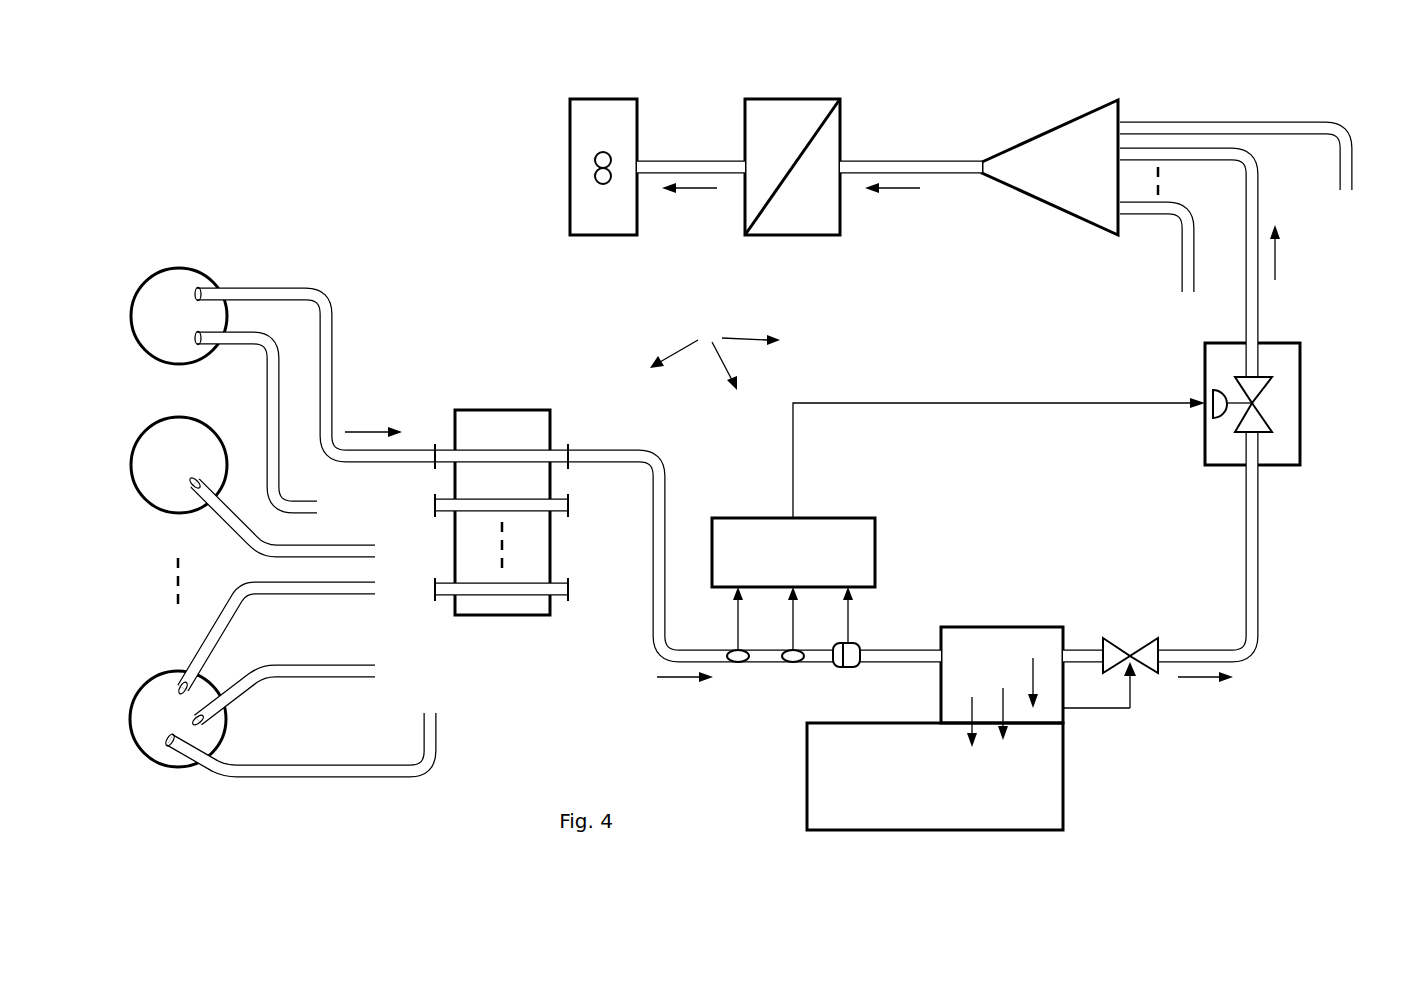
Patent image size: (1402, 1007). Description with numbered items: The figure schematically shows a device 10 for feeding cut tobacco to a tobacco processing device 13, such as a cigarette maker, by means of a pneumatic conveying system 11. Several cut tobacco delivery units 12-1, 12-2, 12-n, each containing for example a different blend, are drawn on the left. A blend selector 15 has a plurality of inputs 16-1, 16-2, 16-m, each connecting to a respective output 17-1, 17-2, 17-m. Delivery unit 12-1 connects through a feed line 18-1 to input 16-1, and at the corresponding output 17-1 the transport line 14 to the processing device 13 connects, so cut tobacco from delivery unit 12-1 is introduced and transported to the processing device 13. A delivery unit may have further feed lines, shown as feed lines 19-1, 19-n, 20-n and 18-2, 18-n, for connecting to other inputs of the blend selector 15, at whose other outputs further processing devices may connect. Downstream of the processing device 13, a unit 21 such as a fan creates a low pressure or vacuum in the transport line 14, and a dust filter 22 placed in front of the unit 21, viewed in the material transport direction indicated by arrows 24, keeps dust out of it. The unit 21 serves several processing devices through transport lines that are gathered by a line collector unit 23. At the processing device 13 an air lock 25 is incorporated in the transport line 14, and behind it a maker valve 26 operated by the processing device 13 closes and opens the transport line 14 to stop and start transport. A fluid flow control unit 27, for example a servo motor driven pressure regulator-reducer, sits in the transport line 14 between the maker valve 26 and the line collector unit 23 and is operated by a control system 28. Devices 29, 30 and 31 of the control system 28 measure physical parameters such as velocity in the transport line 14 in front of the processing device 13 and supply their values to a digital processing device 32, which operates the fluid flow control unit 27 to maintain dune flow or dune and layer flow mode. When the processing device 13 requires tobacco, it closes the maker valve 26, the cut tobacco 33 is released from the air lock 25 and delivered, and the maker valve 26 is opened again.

The device for feeding cut tobacco 10 is at (302, 132).
The pneumatic conveying system 11 is at (715, 352).
The cut tobacco delivery unit 12-1 is at (178, 275).
The cut tobacco delivery unit 12-2 is at (158, 500).
The cut tobacco delivery unit 12-n is at (153, 750).
The tobacco processing device 13 is at (812, 800).
The transport line 14 is at (622, 450).
The blend selector 15 is at (487, 420).
The input of the blend selector 16-1 is at (436, 444).
The input of the blend selector 16-2 is at (440, 516).
The input of the blend selector 16-m is at (440, 601).
The output of the blend selector 17-1 is at (565, 444).
The output of the blend selector 17-2 is at (561, 516).
The output of the blend selector 17-m is at (563, 601).
The feed line 18-1 is at (262, 290).
The feed line 18-2 is at (350, 545).
The feed line 18-n is at (290, 675).
The feed line 19-1 is at (243, 340).
The feed line 19-n is at (222, 625).
The feed line 20-n is at (345, 768).
The unit for creating low pressure 21 is at (597, 228).
The dust filter 22 is at (790, 228).
The line collector unit 23 is at (1043, 195).
The material transport direction 24 is at (693, 195).
The air lock 25 is at (991, 630).
The maker valve 26 is at (1113, 640).
The fluid flow control unit 27 is at (1290, 445).
The control system 28 is at (900, 520).
The measuring device 29 is at (737, 665).
The measuring device 30 is at (793, 665).
The measuring device 31 is at (846, 667).
The digital processing device 32 is at (741, 528).
The cut tobacco 33 is at (970, 706).